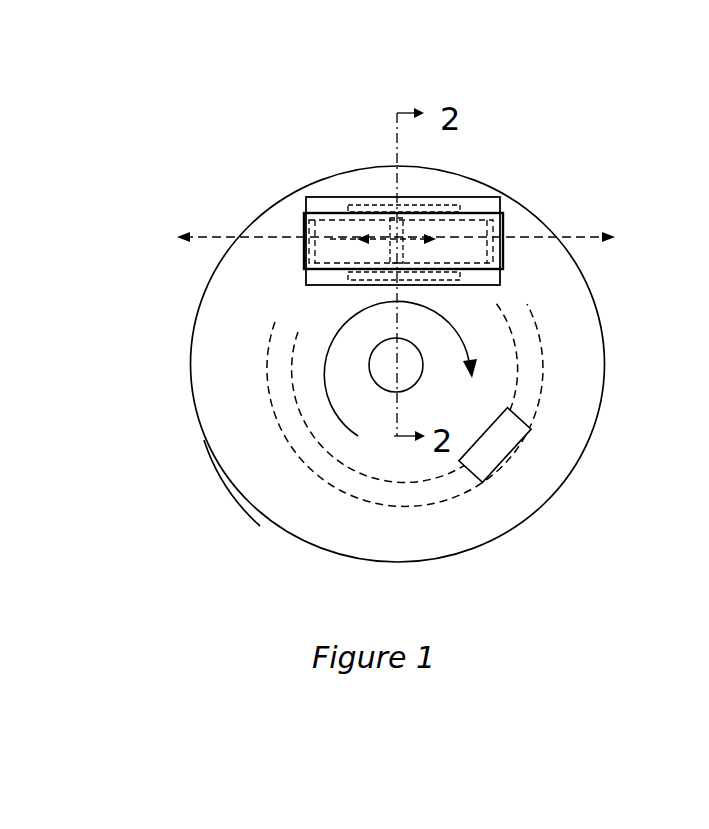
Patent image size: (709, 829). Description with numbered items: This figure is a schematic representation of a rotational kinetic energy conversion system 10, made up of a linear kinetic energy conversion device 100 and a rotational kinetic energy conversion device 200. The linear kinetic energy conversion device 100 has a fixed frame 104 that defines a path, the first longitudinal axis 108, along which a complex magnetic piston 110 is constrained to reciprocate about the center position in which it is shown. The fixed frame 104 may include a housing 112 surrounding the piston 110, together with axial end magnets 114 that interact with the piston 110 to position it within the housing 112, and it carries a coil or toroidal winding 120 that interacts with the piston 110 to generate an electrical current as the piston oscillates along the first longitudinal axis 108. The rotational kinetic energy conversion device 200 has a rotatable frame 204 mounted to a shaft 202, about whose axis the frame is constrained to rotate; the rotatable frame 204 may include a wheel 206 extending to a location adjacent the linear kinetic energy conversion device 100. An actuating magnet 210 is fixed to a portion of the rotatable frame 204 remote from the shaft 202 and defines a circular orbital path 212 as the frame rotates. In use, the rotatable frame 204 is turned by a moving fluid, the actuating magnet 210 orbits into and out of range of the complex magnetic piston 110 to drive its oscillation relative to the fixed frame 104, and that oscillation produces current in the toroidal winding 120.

The rotational kinetic energy conversion system 10 is at (568, 181).
The linear kinetic energy conversion device 100 is at (322, 188).
The fixed frame 104 is at (478, 198).
The first longitudinal axis 108 is at (597, 242).
The complex magnetic piston 110 is at (390, 232).
The housing 112 is at (413, 197).
The axial end magnets 114 is at (297, 227).
The toroidal winding 120 is at (333, 288).
The rotational kinetic energy conversion device 200 is at (190, 417).
The shaft 202 is at (413, 377).
The rotatable frame 204 is at (227, 478).
The wheel 206 is at (338, 513).
The actuating magnet 210 is at (512, 452).
The circular orbital path 212 is at (443, 500).